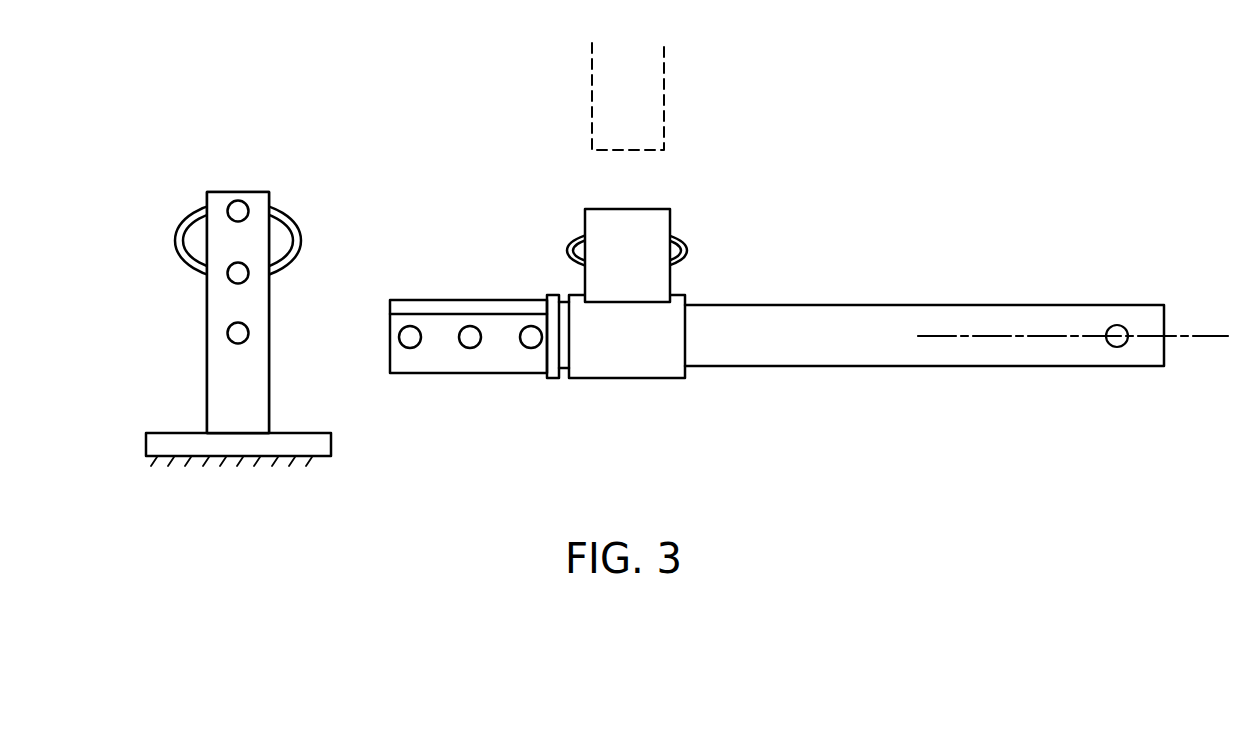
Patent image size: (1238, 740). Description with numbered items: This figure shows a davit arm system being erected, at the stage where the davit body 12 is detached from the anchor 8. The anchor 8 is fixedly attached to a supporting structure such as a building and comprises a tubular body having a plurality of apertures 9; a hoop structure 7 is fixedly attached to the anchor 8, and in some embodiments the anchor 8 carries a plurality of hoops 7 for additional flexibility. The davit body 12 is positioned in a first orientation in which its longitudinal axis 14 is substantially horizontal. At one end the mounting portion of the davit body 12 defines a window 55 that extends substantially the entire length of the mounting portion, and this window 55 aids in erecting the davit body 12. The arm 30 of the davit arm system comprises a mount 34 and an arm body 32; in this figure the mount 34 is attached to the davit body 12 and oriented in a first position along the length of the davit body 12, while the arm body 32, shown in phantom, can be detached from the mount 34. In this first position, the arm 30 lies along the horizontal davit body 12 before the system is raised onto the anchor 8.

The hoop structure 7 is at (302, 233).
The anchor 8 is at (207, 362).
The apertures 9 is at (237, 200).
The davit body 12 is at (793, 367).
The longitudinal axis 14 is at (1197, 338).
The arm 30 is at (685, 96).
The arm body 32 is at (664, 97).
The mount 34 is at (680, 297).
The window 55 is at (401, 377).